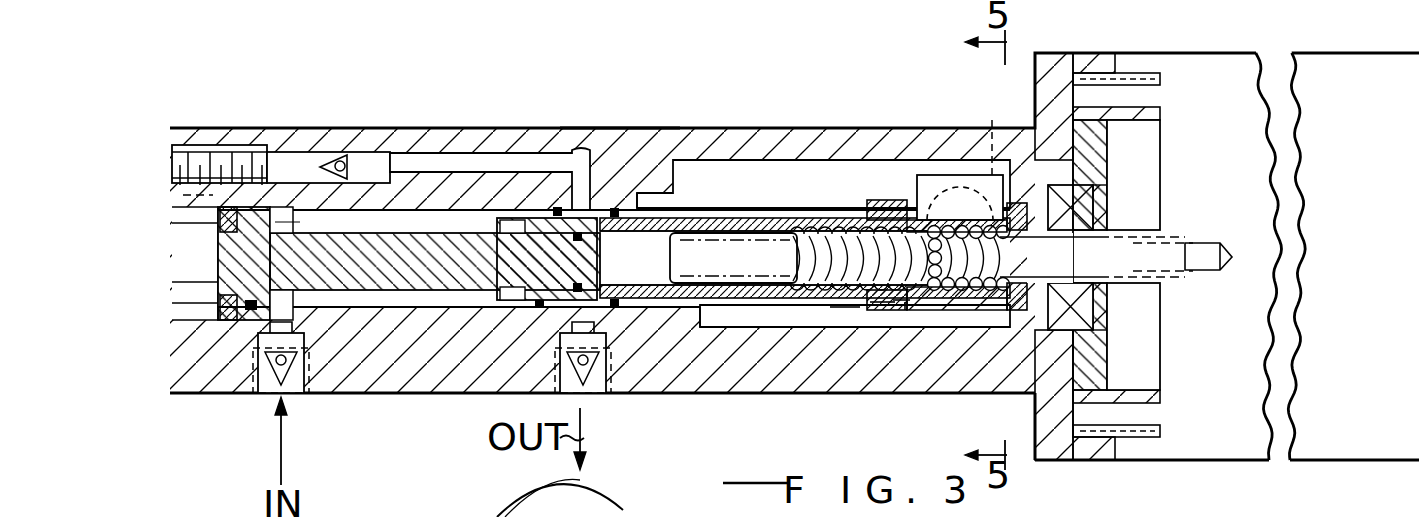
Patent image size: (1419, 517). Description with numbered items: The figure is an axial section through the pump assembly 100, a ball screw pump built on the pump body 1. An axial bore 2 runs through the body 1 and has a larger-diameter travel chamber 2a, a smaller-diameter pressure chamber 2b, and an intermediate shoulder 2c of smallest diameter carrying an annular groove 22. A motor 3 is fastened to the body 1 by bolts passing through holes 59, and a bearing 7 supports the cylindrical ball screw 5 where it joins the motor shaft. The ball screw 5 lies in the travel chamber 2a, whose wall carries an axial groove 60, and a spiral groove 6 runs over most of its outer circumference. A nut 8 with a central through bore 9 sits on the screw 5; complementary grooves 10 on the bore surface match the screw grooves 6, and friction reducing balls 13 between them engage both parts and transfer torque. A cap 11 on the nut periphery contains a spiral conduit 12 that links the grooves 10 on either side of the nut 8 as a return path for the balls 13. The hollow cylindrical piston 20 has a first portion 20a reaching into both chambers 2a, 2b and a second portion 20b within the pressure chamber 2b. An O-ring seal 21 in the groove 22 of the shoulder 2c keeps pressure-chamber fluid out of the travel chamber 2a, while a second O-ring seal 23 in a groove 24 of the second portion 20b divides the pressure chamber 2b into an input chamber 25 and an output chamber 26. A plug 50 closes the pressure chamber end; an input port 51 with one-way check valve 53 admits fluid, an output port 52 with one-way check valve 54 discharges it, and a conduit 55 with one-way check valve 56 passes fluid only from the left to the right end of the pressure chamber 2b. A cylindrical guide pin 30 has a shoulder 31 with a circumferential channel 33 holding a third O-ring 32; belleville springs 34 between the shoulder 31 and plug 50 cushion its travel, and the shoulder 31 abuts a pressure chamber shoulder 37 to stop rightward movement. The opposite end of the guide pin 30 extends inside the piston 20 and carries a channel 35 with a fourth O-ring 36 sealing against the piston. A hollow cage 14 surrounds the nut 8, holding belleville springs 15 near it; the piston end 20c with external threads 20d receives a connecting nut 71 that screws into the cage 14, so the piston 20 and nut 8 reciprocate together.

The pump body 1 is at (612, 205).
The axial bore 2 is at (712, 322).
The travel chamber 2a is at (715, 320).
The pressure chamber 2b is at (433, 307).
The shoulder 2c is at (675, 313).
The motor 3 is at (1227, 437).
The ball screw 5 is at (748, 281).
The spiral groove 6 is at (840, 313).
The bearing 7 is at (1090, 317).
The nut 8 is at (985, 310).
The central through bore 9 is at (900, 300).
The complementary grooves 10 is at (993, 247).
The cap 11 is at (928, 176).
The spiral conduit 12 is at (1031, 156).
The friction reducing balls 13 is at (950, 135).
The cage 14 is at (1000, 320).
The belleville springs 15 is at (1018, 200).
The piston 20 is at (718, 225).
The first piston portion 20a is at (670, 222).
The second piston portion 20b is at (535, 307).
The piston end 20c is at (872, 212).
The external threads 20d is at (885, 302).
The O-ring seal 21 is at (615, 205).
The annular groove 22 is at (620, 307).
The second O-ring seal 23 is at (575, 225).
The groove 24 is at (540, 207).
The input chamber 25 is at (363, 300).
The output chamber 26 is at (575, 317).
The guide pin 30 is at (423, 280).
The guide pin shoulder 31 is at (243, 307).
The third O-ring 32 is at (258, 320).
The circumferential channel 33 is at (255, 207).
The belleville springs 34 is at (215, 207).
The circumferential channel 35 is at (545, 240).
The fourth O-ring 36 is at (600, 262).
The pressure chamber shoulder 37 is at (268, 212).
The plug 50 is at (180, 262).
The input port 51 is at (292, 400).
The output port 52 is at (598, 393).
The one-way check valve 53 is at (257, 398).
The one-way check valve 54 is at (590, 395).
The conduit 55 is at (430, 128).
The one-way check valve 56 is at (330, 128).
The through holes 59 is at (1035, 420).
The axial groove 60 is at (773, 187).
The connecting nut 71 is at (908, 305).
The pump assembly 100 is at (838, 60).